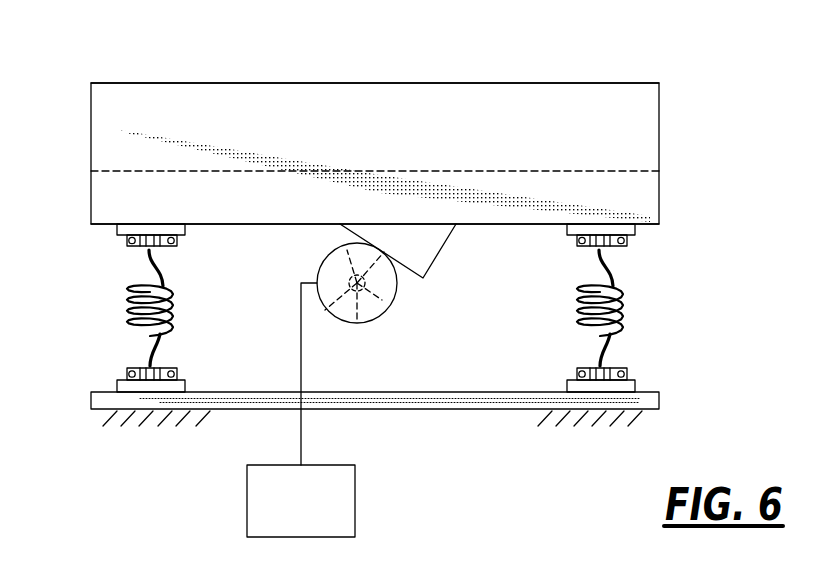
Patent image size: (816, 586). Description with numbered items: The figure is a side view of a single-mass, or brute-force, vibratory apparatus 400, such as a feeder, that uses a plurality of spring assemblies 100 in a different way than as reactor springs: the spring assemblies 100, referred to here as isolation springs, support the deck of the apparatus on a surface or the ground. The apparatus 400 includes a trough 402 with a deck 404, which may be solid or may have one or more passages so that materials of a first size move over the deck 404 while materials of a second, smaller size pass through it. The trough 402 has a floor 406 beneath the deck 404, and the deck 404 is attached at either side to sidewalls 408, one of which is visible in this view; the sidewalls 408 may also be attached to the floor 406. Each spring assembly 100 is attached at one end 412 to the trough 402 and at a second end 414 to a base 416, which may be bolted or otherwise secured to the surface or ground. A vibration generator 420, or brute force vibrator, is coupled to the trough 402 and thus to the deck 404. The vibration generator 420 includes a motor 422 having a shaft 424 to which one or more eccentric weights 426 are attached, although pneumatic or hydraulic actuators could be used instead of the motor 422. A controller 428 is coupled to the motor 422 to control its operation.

The apparatus 400 is at (105, 68).
The trough 402 is at (380, 83).
The deck 404 is at (634, 170).
The floor 406 is at (196, 224).
The sidewall 408 is at (620, 106).
The one end 412 is at (127, 240).
The second end 414 is at (127, 376).
The base 416 is at (646, 401).
The spring assembly 100 is at (108, 286).
The vibration generator 420 is at (427, 302).
The motor 422 is at (350, 257).
The shaft 424 is at (325, 310).
The eccentric weight 426 is at (382, 300).
The controller 428 is at (337, 488).